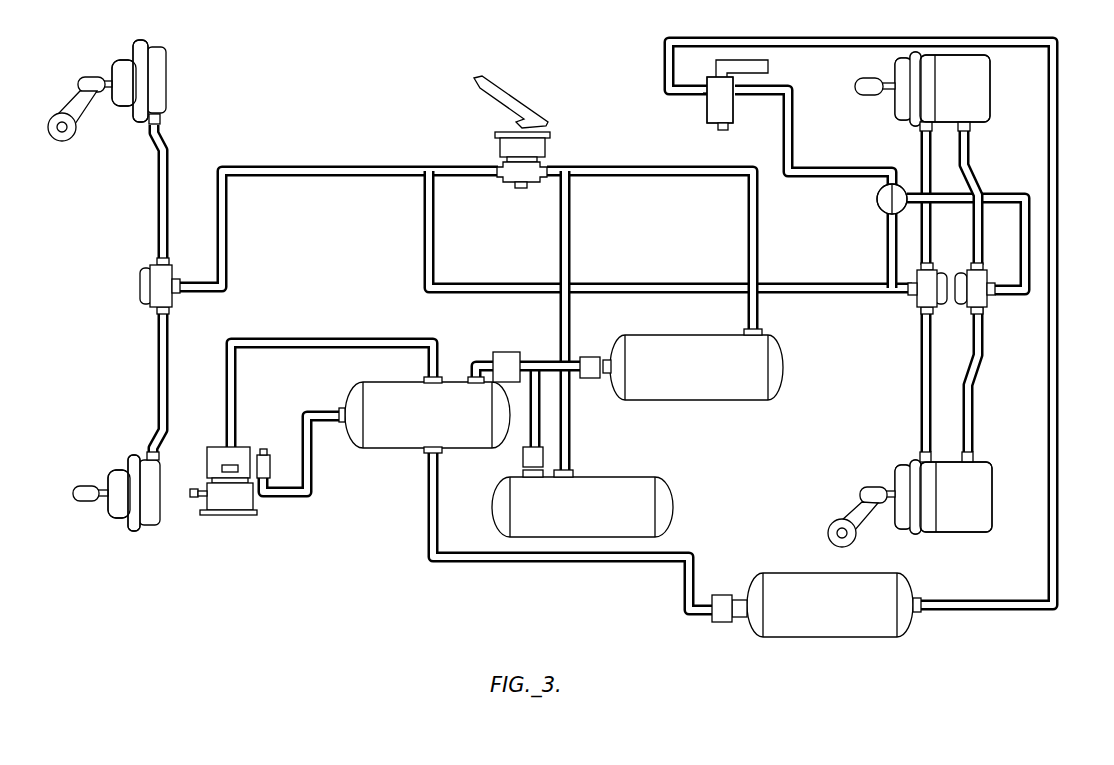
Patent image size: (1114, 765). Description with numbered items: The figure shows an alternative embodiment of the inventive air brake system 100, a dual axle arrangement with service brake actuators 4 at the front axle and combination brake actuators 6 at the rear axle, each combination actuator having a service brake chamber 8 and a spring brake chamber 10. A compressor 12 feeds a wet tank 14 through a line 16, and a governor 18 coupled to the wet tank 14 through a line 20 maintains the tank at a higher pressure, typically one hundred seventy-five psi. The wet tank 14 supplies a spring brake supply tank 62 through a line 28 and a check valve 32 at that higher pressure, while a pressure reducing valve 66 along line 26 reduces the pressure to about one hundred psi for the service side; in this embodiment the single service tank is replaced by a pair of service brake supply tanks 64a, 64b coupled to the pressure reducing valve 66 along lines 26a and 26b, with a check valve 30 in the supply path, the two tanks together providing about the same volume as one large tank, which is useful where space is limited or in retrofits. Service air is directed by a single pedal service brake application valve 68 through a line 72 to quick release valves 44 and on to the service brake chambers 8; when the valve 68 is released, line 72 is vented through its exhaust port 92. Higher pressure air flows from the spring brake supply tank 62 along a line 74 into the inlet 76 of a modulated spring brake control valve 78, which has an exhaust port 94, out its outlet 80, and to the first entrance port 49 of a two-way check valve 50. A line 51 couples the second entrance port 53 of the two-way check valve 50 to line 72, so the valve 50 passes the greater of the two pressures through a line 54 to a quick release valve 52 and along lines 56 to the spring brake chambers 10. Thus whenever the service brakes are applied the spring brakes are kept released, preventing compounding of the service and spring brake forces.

The service brake actuators 4 is at (172, 45).
The combination brake actuators 6 is at (1000, 84).
The service brake chamber 8 is at (155, 74).
The spring brake chamber 10 is at (982, 112).
The compressor 12 is at (228, 510).
The wet tank 14 is at (376, 445).
The line 16 is at (267, 340).
The governor 18 is at (272, 460).
The line 20 is at (300, 498).
The line 26 is at (478, 362).
The line 26a is at (540, 428).
The line 26b is at (573, 358).
The line 28 is at (665, 556).
The check valve 30 is at (590, 380).
The check valve 32 is at (716, 625).
The quick release valves 44 is at (165, 298).
The first entrance port 49 is at (886, 190).
The two-way check valve 50 is at (880, 203).
The line 51 is at (888, 250).
The quick release valve 52 is at (978, 298).
The second entrance port 53 is at (886, 212).
The line 54 is at (1017, 197).
The lines 56 is at (966, 182).
The spring brake supply tank 62 is at (795, 628).
The service brake supply tank 64a is at (640, 490).
The service brake supply tank 64b is at (682, 392).
The pressure reducing valve 66 is at (517, 342).
The service brake application valve 68 is at (532, 122).
The line 72 is at (432, 262).
The line 74 is at (1058, 516).
The inlet 76 is at (702, 98).
The modulated spring brake control valve 78 is at (711, 112).
The outlet 80 is at (737, 87).
The exhaust port 92 is at (520, 190).
The exhaust port 94 is at (728, 128).
The air brake system 100 is at (126, 619).